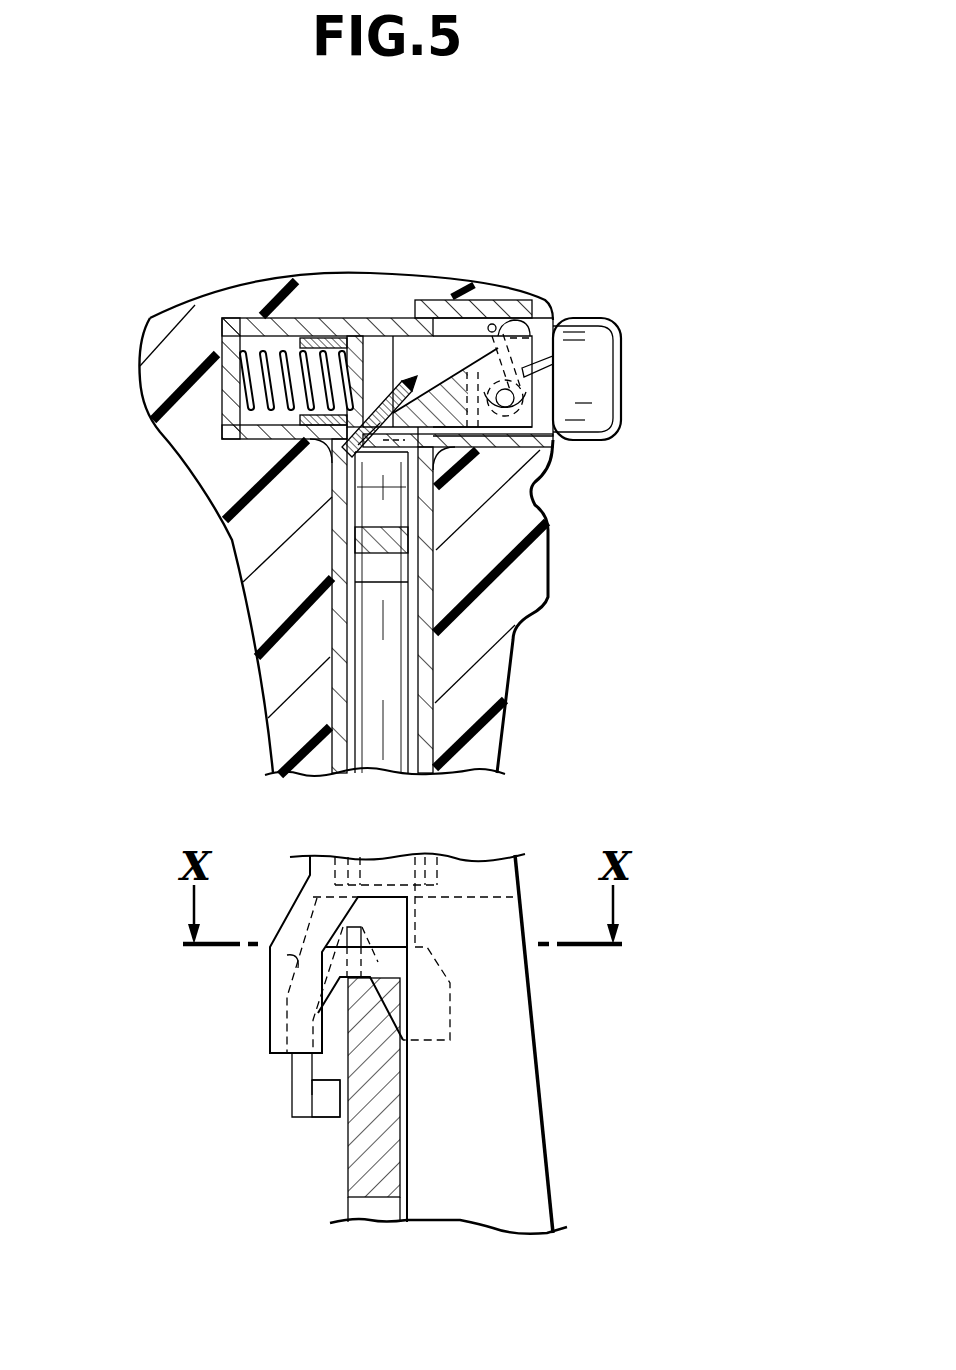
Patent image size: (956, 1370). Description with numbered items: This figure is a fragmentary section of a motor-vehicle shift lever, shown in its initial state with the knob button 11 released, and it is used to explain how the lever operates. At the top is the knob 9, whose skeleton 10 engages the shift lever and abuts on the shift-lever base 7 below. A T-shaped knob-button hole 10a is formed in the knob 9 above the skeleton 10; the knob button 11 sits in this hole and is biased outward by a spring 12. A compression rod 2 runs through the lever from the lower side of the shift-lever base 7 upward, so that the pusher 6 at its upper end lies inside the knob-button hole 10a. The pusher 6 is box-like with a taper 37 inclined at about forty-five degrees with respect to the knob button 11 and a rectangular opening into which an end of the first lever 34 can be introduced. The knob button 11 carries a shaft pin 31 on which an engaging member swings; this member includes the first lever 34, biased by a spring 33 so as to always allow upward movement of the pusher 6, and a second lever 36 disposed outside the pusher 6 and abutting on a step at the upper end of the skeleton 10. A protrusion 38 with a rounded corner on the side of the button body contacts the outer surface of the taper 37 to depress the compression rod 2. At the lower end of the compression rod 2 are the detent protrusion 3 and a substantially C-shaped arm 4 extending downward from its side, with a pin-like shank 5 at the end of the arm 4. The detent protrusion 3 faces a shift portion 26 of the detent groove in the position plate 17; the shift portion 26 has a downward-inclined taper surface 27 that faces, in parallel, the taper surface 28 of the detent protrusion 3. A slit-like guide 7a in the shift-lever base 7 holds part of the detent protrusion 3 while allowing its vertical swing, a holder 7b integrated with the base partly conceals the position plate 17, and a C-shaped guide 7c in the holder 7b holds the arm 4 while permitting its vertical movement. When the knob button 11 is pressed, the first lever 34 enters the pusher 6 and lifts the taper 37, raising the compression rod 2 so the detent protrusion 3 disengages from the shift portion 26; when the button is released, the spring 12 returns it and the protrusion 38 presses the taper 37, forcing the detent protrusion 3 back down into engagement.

The compression rod 2 is at (388, 727).
The detent protrusion 3 is at (420, 993).
The arm 4 is at (300, 1078).
The shank 5 is at (327, 1103).
The pusher 6 is at (370, 487).
The shift-lever base 7 is at (562, 1180).
The guide 7a is at (493, 1047).
The holder 7b is at (268, 1000).
The guide 7c is at (273, 955).
The knob 9 is at (140, 372).
The skeleton 10 is at (435, 713).
The knob-button hole 10a is at (240, 438).
The knob button 11 is at (592, 305).
The spring 12 is at (272, 378).
The position plate 17 is at (377, 1190).
The shift portion 26 is at (353, 937).
The taper surface 27 is at (390, 940).
The taper surface 28 is at (385, 1035).
The shaft pin 31 is at (516, 399).
The spring 33 is at (555, 368).
The first lever 34 is at (466, 372).
The second lever 36 is at (412, 460).
The taper 37 is at (416, 378).
The protrusion 38 is at (385, 395).